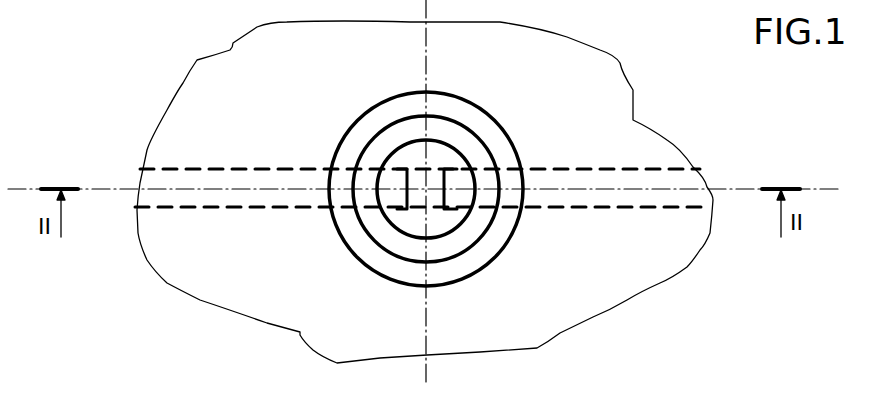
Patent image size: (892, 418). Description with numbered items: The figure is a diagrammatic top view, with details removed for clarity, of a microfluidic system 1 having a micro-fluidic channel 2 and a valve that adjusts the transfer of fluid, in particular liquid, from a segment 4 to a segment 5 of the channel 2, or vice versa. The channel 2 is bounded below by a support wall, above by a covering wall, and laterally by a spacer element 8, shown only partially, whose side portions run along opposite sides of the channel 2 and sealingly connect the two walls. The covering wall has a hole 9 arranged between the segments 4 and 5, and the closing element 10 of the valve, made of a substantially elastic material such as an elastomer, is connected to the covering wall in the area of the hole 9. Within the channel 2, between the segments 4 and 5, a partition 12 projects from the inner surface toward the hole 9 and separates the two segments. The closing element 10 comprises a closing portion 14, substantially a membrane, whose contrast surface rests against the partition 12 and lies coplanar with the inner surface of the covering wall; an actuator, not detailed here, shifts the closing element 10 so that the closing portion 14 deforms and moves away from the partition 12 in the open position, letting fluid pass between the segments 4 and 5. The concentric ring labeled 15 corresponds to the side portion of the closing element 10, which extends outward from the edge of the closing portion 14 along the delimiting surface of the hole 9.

The microfluidic system 1 is at (682, 97).
The micro-fluidic channel 2 is at (263, 168).
The segment 4 is at (190, 205).
The segment 5 is at (580, 192).
The spacer element 8 is at (557, 75).
The hole 9 is at (453, 138).
The closing element 10 is at (350, 110).
The partition 12 is at (433, 203).
The closing portion 14 is at (407, 218).
The middle ring 15 is at (493, 155).